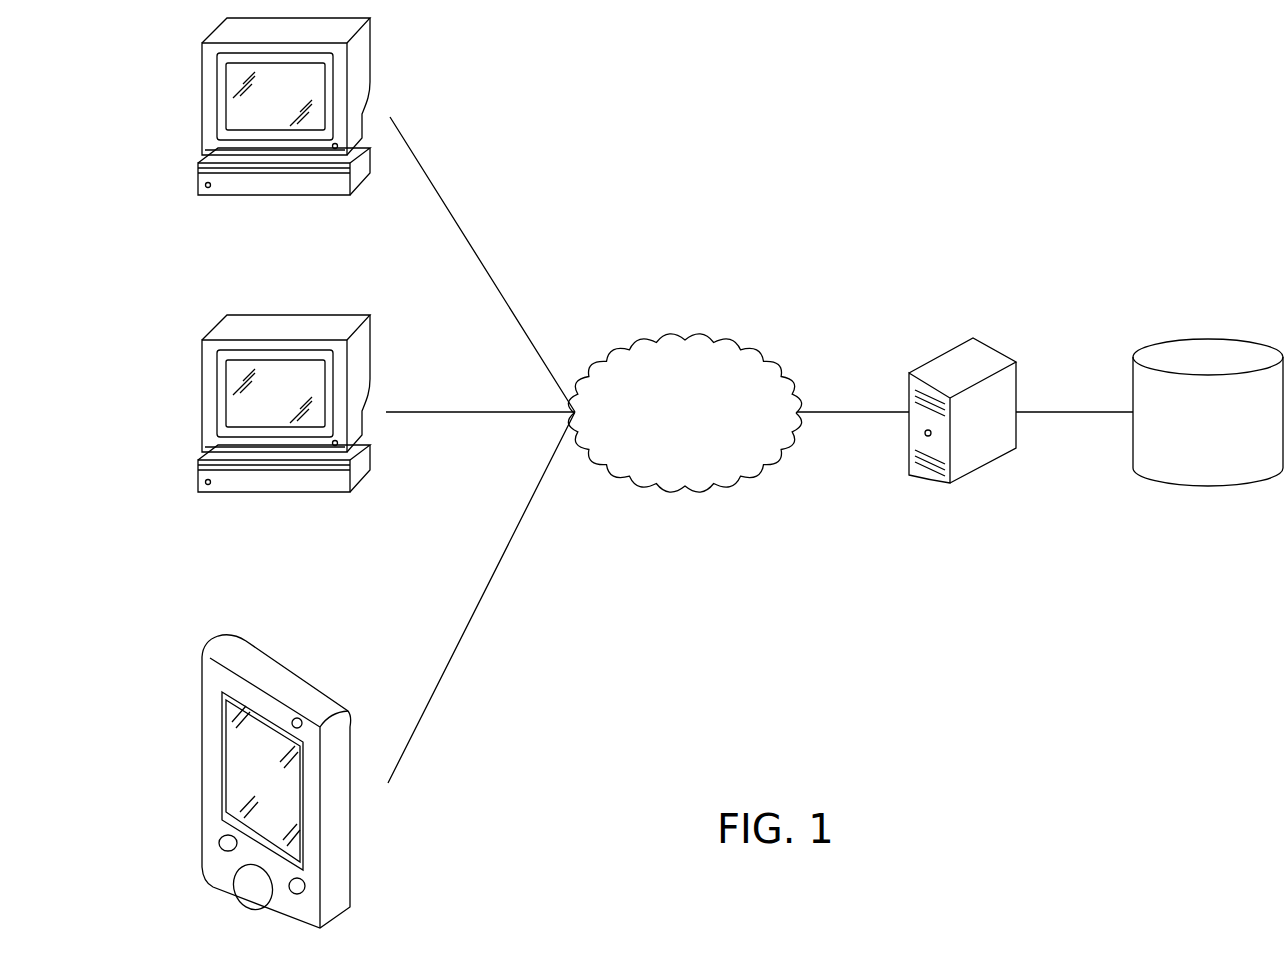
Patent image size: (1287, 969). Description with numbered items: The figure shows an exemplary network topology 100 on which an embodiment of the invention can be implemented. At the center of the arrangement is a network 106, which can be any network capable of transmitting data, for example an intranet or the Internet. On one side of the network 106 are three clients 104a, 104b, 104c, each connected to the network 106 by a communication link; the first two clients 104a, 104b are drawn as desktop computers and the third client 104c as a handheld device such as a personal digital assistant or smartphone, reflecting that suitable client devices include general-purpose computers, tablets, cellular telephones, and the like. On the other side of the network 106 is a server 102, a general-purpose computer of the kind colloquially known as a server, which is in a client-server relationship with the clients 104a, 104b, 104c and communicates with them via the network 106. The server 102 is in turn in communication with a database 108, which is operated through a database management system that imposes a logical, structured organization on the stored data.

The network topology 100 is at (1192, 122).
The server 102 is at (958, 486).
The client 104a is at (202, 100).
The client 104b is at (202, 397).
The client 104c is at (202, 765).
The network 106 is at (708, 426).
The database 108 is at (1232, 433).